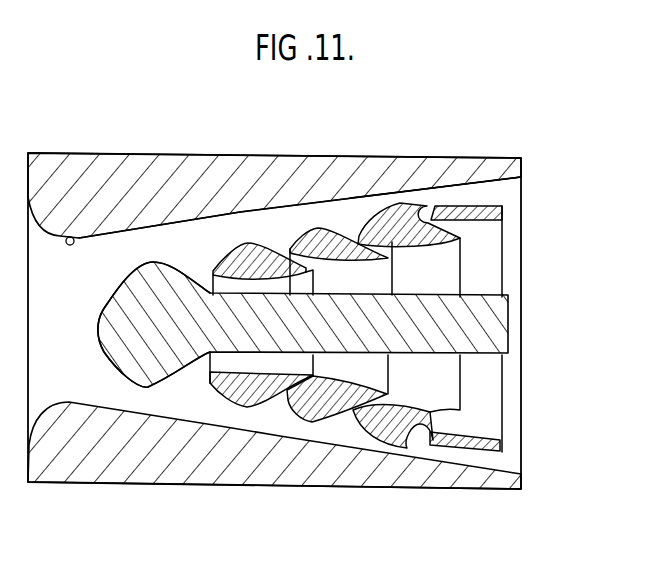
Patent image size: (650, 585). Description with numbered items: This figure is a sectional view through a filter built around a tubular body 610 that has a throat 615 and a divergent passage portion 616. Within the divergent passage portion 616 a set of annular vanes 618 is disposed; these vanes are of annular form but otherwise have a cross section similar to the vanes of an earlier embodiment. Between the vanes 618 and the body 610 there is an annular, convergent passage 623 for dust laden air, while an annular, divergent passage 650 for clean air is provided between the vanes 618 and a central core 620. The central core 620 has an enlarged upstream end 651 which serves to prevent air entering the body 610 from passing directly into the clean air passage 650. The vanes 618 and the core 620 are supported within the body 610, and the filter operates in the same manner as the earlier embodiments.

The tubular body 610 is at (71, 237).
The throat 615 is at (70, 241).
The divergent passage portion 616 is at (347, 206).
The annular vanes 618 is at (259, 262).
The central core 620 is at (482, 343).
The annular convergent passage 623 is at (460, 192).
The annular divergent passage 650 is at (448, 263).
The enlarged upstream end 651 is at (152, 362).